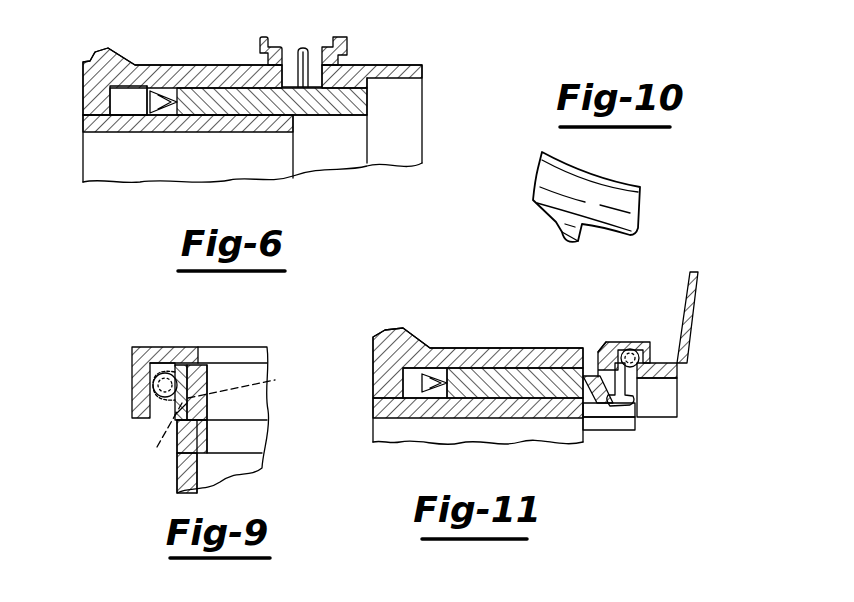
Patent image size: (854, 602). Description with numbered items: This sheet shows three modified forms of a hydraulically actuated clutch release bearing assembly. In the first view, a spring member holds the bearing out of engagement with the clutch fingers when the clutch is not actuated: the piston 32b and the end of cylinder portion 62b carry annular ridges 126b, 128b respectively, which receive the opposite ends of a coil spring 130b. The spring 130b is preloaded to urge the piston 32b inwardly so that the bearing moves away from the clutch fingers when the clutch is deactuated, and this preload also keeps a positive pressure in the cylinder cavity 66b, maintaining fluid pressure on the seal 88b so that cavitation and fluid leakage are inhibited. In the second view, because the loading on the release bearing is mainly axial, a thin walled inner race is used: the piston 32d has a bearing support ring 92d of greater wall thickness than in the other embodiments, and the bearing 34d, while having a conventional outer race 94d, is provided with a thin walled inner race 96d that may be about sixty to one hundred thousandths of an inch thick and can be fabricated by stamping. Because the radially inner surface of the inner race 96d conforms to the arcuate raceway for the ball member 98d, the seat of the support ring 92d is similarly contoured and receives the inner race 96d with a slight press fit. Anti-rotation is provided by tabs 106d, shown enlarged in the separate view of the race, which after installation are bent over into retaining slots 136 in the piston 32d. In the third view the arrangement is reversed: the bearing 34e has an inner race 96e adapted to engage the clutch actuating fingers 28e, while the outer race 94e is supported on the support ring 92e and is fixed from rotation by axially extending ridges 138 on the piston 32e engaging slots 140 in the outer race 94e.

In FIG. 6, the piston 32b is at (328, 117).
In FIG. 6, the end of cylinder portion 62b is at (183, 66).
In FIG. 6, the cylinder cavity 66b is at (127, 113).
In FIG. 6, the seal 88b is at (171, 119).
In FIG. 6, the annular ridge 126b is at (347, 58).
In FIG. 6, the annular ridge 128b is at (270, 37).
In FIG. 6, the coil spring 130b is at (305, 48).
In FIG. 9, the piston 32d is at (195, 478).
In FIG. 9, the bearing 34d is at (137, 345).
In FIG. 9, the outer race 94d is at (150, 349).
In FIG. 9, the thin walled inner race 96d is at (181, 367).
In FIG. 10, the thin walled inner race 96d is at (582, 183).
In FIG. 9, the bearing support ring 92d is at (200, 368).
In FIG. 9, the ball member 98d is at (155, 384).
In FIG. 9, the tabs 106d is at (273, 382).
In FIG. 10, the tabs 106d is at (575, 242).
In FIG. 9, the retaining slots 136 is at (157, 447).
In FIG. 11, the piston 32e is at (529, 389).
In FIG. 11, the bearing 34e is at (595, 334).
In FIG. 11, the axially extending ridges 138 is at (600, 362).
In FIG. 11, the outer race 94e is at (627, 345).
In FIG. 11, the clutch actuating fingers 28e is at (698, 290).
In FIG. 11, the inner race 96e is at (657, 379).
In FIG. 11, the support ring 92e is at (618, 405).
In FIG. 11, the slots 140 is at (600, 405).